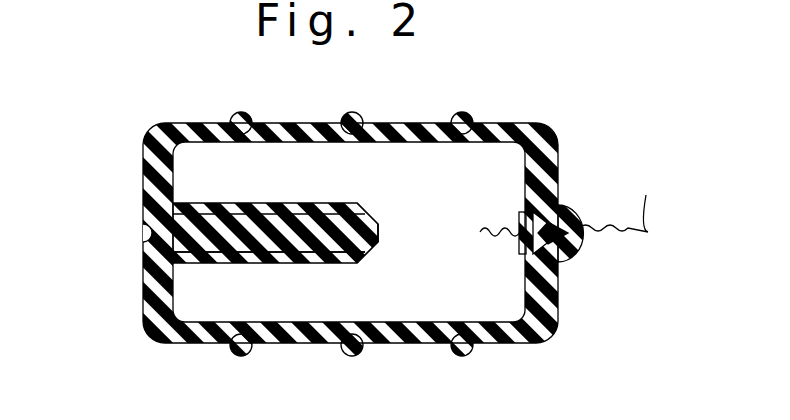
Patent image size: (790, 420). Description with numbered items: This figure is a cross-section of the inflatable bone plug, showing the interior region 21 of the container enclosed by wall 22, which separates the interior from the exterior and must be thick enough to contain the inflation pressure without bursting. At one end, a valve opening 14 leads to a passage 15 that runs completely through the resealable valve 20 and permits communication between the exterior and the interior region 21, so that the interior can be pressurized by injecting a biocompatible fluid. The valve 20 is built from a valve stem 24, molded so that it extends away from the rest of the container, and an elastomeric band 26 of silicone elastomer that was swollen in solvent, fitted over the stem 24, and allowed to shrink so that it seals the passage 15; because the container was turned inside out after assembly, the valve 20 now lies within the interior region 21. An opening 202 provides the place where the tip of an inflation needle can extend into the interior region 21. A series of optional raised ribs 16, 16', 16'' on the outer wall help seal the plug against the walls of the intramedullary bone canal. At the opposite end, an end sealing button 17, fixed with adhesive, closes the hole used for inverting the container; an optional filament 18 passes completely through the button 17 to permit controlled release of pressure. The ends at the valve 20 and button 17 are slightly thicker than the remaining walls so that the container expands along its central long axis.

The valve opening 14 is at (137, 233).
The passage 15 is at (253, 230).
The raised rib 16 is at (215, 374).
The raised rib 16' is at (384, 374).
The raised rib 16'' is at (501, 374).
The end sealing button 17 is at (575, 242).
The filament 18 is at (583, 200).
The resealable valve 20 is at (343, 193).
The interior region 21 is at (499, 305).
The wall 22 is at (547, 125).
The valve stem 24 is at (320, 248).
The elastomeric band 26 is at (270, 258).
The opening 202 is at (383, 232).